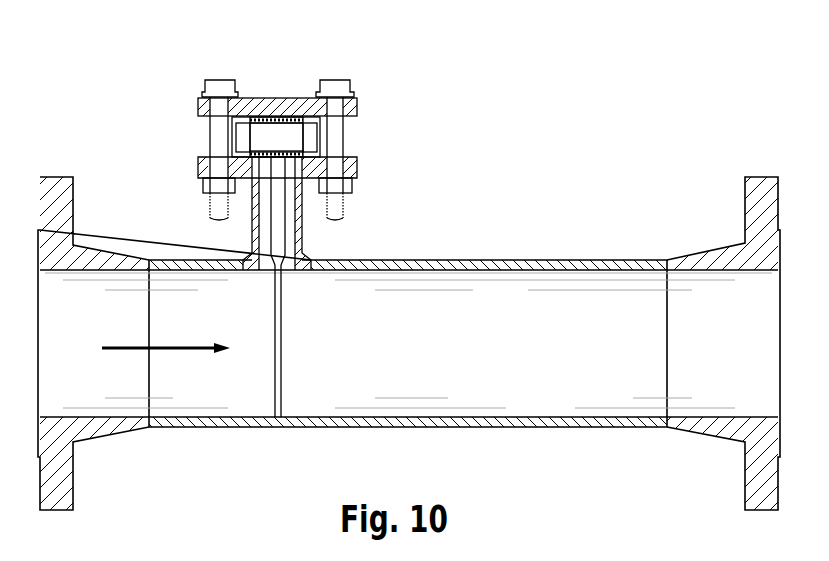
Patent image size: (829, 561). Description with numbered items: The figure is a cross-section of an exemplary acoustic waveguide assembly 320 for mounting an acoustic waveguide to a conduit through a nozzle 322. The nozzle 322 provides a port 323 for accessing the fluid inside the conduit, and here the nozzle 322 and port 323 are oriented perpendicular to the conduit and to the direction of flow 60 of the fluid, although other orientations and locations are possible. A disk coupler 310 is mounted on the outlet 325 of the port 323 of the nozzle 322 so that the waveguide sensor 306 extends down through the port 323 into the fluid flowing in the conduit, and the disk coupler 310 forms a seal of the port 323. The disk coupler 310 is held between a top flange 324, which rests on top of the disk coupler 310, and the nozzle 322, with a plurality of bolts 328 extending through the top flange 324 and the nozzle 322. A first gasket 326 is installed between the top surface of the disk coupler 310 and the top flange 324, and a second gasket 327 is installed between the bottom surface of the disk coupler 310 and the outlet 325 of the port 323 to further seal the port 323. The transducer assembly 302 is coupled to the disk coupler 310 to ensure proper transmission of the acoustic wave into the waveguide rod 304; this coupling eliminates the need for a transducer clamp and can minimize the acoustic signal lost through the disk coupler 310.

The direction of flow 60 is at (122, 347).
The acoustic waveguide assembly 320 is at (460, 54).
The top flange 324 is at (202, 103).
The bolts 328 is at (336, 83).
The transducer assembly 302 is at (240, 137).
The disk coupler 310 is at (282, 130).
The first gasket 326 is at (297, 121).
The second gasket 327 is at (289, 156).
The nozzle 322 is at (202, 166).
The outlet 325 is at (294, 176).
The port 323 is at (285, 265).
The waveguide rod 304 is at (275, 237).
The waveguide sensor 306 is at (279, 332).